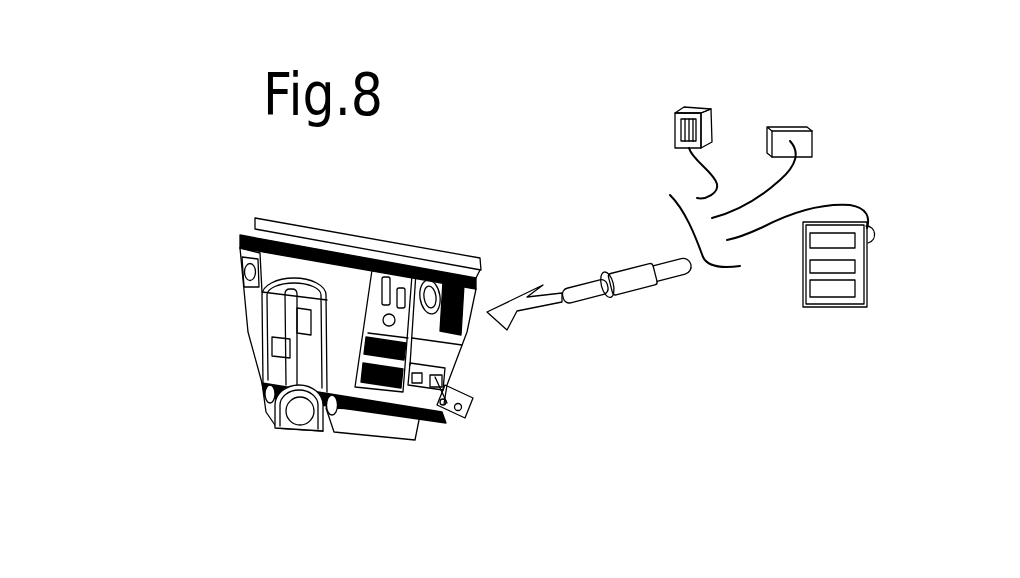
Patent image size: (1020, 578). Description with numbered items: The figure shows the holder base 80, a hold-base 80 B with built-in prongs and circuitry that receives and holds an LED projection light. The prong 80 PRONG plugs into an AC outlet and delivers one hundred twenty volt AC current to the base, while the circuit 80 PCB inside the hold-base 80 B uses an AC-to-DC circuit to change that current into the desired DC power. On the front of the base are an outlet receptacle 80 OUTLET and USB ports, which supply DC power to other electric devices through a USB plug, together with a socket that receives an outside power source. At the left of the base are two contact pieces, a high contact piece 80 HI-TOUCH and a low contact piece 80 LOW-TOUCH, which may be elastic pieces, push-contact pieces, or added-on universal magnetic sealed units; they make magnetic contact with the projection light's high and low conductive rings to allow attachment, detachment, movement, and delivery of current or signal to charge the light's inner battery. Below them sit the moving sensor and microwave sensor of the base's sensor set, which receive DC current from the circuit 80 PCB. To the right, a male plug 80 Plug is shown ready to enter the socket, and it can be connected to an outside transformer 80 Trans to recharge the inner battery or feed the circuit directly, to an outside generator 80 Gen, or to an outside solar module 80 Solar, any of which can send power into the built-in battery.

The holder base 80 is at (335, 326).
The hold-base 80 B is at (241, 238).
The hi contact-piece 80 HI-TOUCH is at (287, 318).
The low contact-piece 80 LOW-TOUCH is at (270, 357).
The outlet receptacle 80 OUTLET is at (396, 275).
The prong 80 PRONG is at (457, 415).
The circuit 80 PCB is at (447, 413).
The male plug 80 Plug is at (638, 306).
The outside transformer 80 Trans is at (717, 80).
The outside generator 80 Gen is at (783, 122).
The outside solar module 80 Solar is at (833, 242).